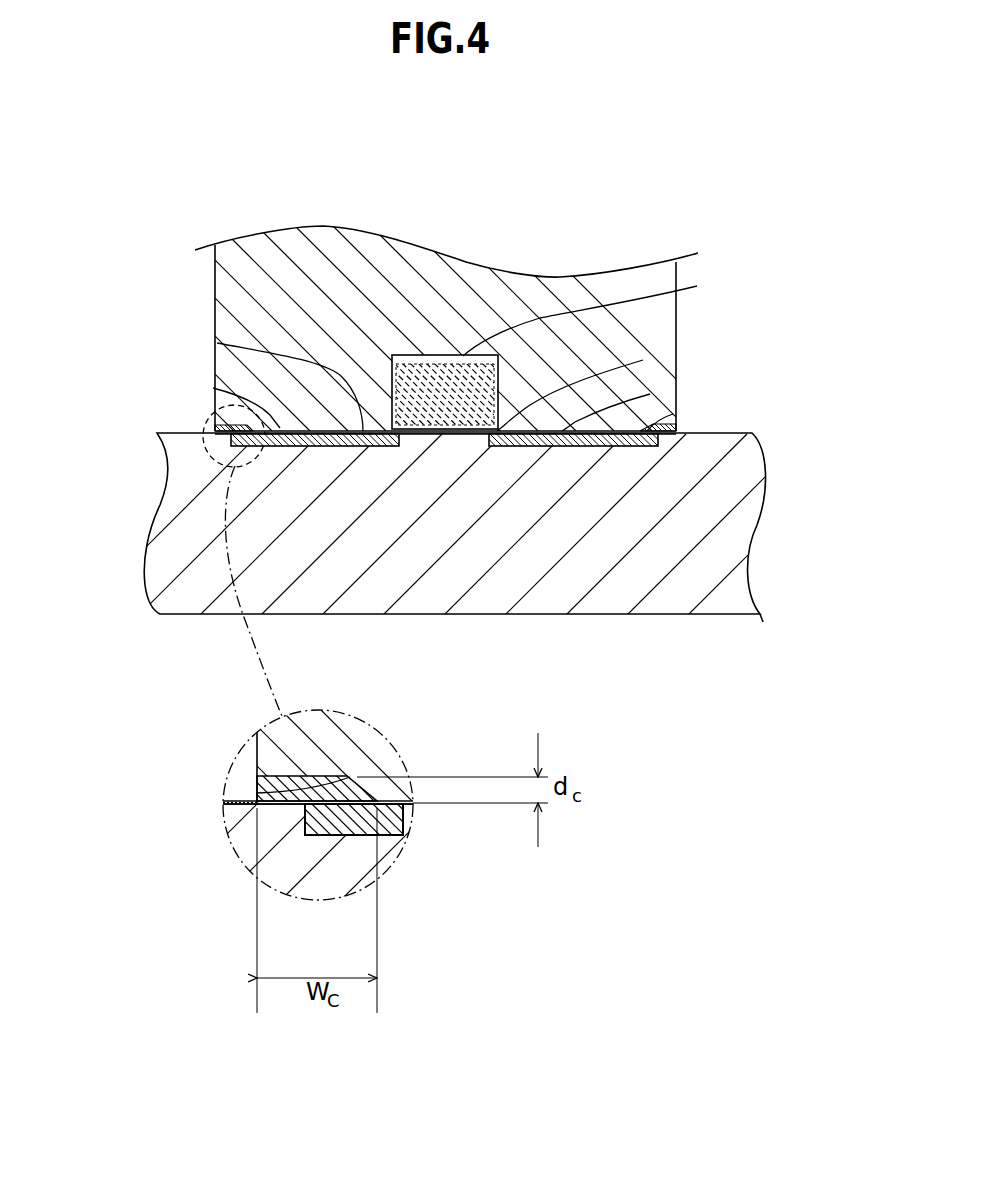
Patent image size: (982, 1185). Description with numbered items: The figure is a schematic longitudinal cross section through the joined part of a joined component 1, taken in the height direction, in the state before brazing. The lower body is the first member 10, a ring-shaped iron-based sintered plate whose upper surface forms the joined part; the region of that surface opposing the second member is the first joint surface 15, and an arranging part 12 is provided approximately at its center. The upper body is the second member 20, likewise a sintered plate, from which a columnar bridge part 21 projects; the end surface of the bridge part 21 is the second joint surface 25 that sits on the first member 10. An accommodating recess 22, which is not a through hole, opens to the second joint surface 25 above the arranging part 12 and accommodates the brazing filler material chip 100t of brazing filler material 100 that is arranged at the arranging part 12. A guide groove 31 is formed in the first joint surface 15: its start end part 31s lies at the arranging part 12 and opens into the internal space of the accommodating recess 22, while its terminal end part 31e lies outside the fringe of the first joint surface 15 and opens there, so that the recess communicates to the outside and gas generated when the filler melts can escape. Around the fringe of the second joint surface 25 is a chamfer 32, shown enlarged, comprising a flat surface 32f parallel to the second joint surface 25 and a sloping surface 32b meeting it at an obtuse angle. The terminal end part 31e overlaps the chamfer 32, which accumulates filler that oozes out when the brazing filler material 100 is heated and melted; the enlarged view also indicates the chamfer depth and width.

The joined component 1 is at (197, 233).
The first member 10 is at (150, 521).
The arranging part 12 is at (433, 431).
The first joint surface 15 is at (217, 343).
The second member 20 is at (214, 280).
The bridge part 21 is at (227, 317).
The accommodating recess 22 is at (597, 314).
The second joint surface 25 is at (290, 447).
The guide groove 31 is at (213, 388).
The start end part 31s is at (643, 360).
The terminal end part 31e is at (673, 414).
The chamfer 32 is at (212, 430).
The flat surface 32f is at (257, 786).
The sloping surface 32b is at (257, 802).
The brazing filler material 100 is at (312, 446).
The brazing filler material chip 100t is at (452, 363).